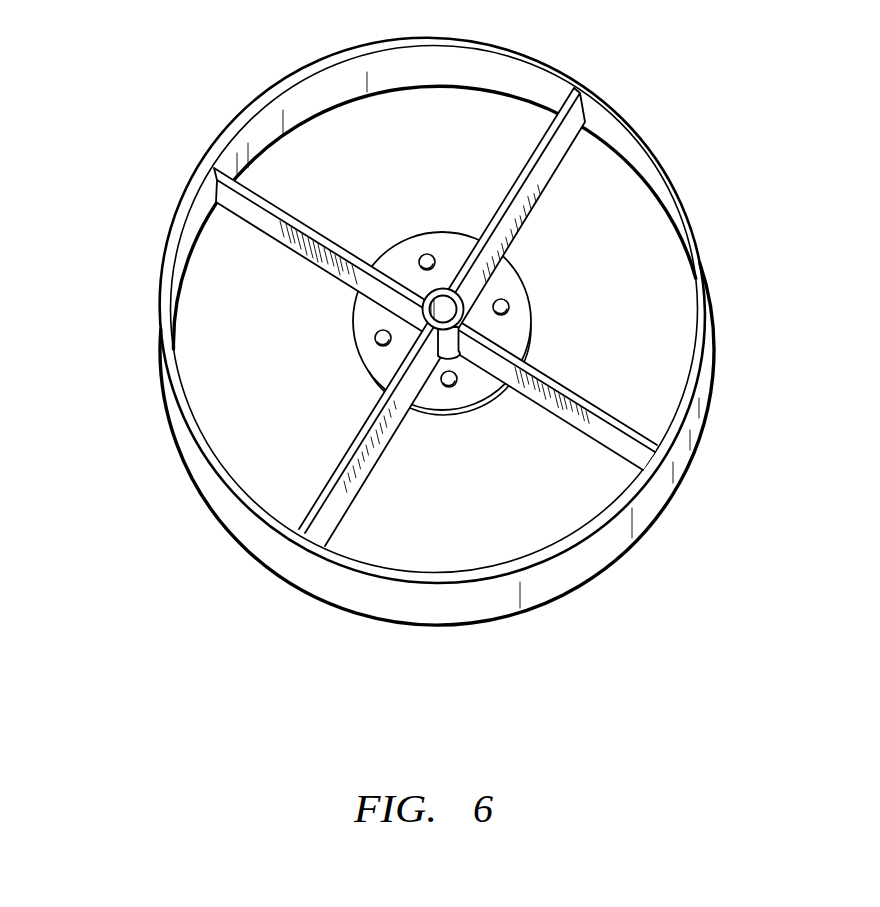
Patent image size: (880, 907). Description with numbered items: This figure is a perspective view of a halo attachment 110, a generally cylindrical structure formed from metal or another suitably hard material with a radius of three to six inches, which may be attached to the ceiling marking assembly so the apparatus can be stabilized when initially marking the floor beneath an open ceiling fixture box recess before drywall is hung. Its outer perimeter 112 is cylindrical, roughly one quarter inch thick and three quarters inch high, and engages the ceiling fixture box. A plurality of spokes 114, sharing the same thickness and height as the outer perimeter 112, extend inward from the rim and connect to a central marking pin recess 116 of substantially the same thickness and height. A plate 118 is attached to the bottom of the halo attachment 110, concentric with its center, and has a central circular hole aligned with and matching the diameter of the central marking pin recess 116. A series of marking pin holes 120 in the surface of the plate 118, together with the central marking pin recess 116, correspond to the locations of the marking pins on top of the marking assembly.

The halo attachment 110 is at (162, 39).
The outer perimeter 112 is at (168, 248).
The spokes 114 is at (287, 203).
The central marking pin recess 116 is at (447, 306).
The plate 118 is at (354, 353).
The marking pin holes 120 is at (432, 256).